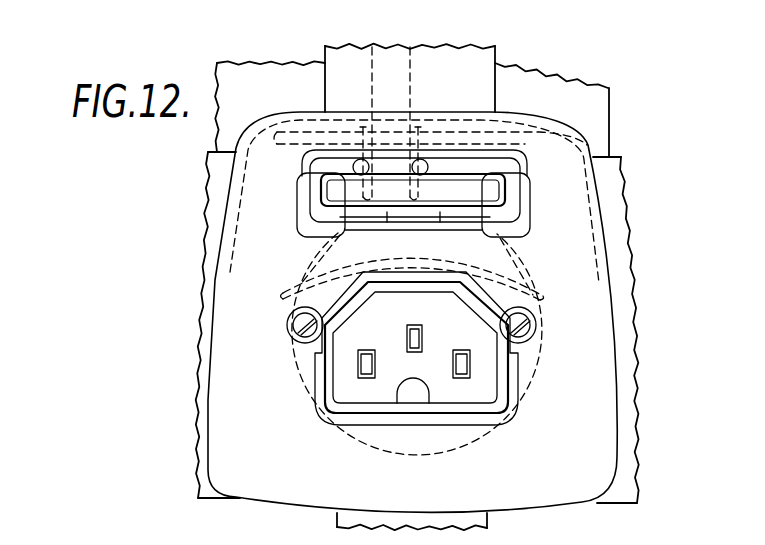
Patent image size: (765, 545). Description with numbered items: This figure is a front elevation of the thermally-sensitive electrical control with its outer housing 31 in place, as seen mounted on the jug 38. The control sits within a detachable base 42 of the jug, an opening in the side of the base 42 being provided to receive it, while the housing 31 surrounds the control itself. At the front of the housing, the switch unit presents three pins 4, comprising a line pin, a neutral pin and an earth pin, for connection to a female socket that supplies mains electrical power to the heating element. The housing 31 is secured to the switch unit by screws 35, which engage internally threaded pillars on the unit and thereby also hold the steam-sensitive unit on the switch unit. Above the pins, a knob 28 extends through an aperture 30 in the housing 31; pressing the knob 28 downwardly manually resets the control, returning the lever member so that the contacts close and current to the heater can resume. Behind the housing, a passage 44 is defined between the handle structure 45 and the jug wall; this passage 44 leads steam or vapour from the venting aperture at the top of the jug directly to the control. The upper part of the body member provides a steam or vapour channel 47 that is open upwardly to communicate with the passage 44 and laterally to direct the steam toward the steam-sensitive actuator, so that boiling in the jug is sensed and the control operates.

The pins 4 is at (453, 365).
The knob 28 is at (505, 196).
The aperture 30 is at (523, 172).
The housing 31 is at (571, 182).
The screws 35 is at (304, 344).
The jug 38 is at (609, 91).
The detachable base 42 is at (620, 184).
The passage 44 is at (406, 62).
The handle structure 45 is at (476, 65).
The steam or vapour channel 47 is at (392, 113).